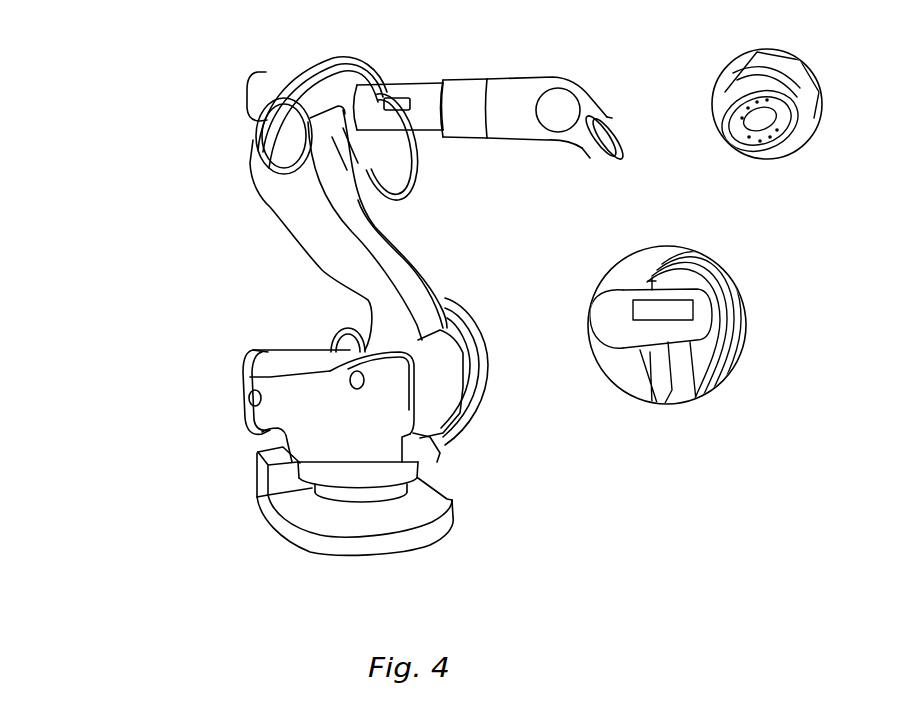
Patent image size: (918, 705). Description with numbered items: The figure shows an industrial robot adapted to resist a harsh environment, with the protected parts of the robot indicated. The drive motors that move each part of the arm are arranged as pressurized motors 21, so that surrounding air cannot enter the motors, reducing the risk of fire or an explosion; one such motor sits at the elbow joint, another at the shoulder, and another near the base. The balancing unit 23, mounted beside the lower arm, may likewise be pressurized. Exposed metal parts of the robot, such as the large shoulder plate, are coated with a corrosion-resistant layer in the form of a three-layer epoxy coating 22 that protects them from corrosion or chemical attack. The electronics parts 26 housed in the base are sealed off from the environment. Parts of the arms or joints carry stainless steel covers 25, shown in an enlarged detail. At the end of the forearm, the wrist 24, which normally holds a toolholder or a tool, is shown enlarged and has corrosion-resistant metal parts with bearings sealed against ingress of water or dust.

The pressurized motors 21 is at (505, 280).
The 3-layer epoxy coating 22 is at (371, 298).
The balancing unit 23 is at (238, 370).
The wrist 24 is at (610, 136).
The stainless steel covers 25 is at (407, 108).
The electronics parts 26 is at (374, 384).